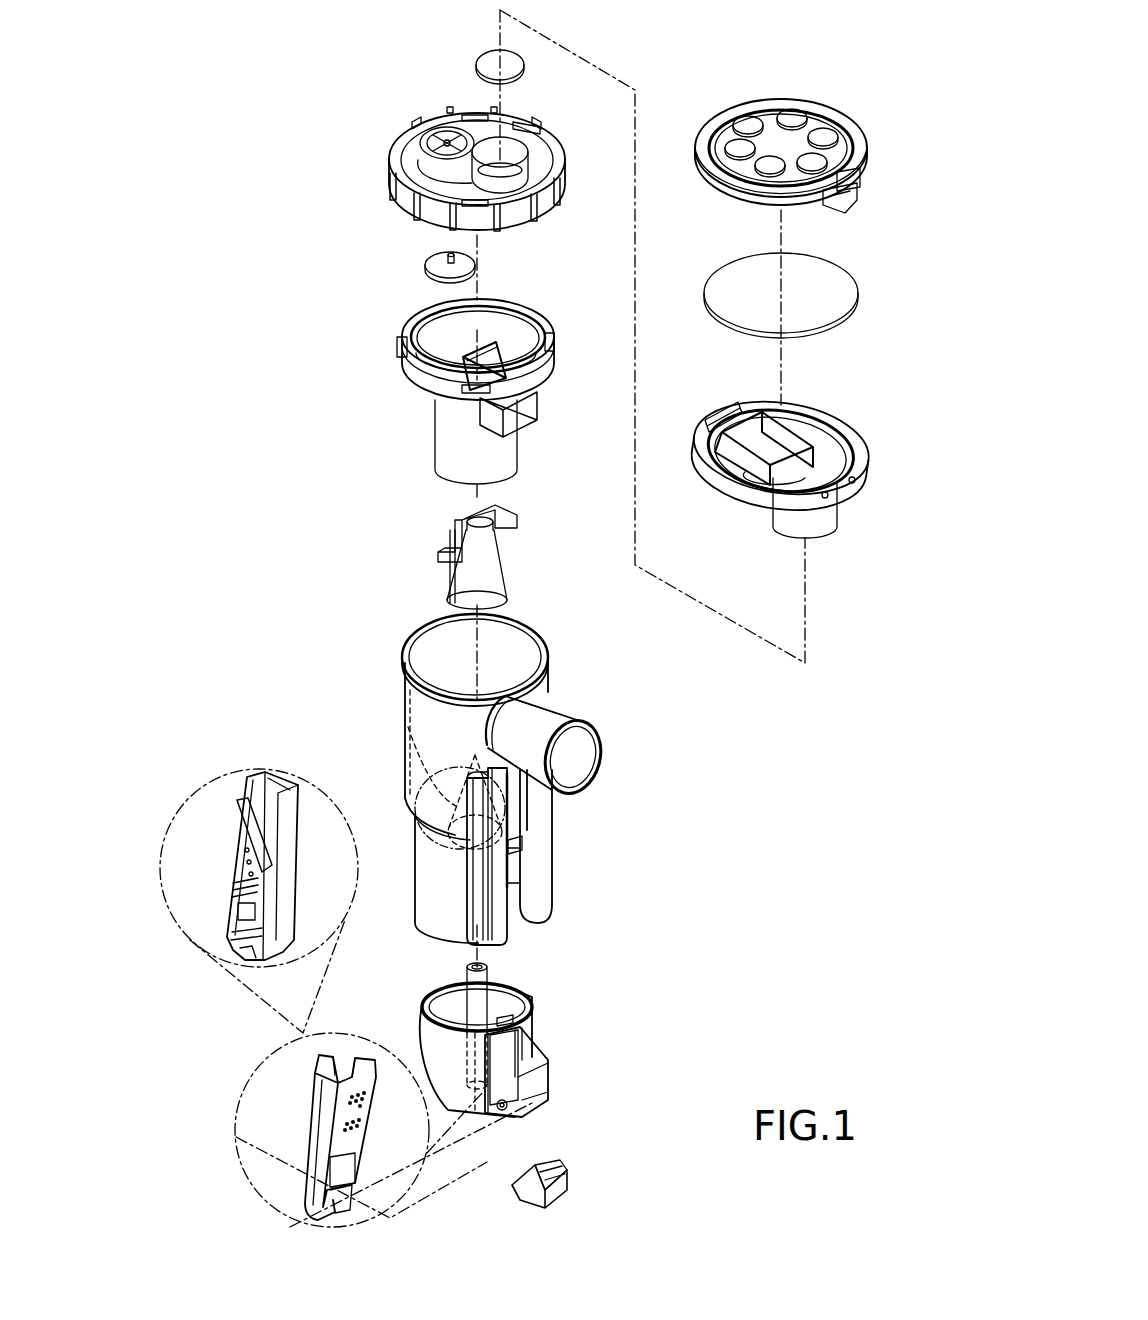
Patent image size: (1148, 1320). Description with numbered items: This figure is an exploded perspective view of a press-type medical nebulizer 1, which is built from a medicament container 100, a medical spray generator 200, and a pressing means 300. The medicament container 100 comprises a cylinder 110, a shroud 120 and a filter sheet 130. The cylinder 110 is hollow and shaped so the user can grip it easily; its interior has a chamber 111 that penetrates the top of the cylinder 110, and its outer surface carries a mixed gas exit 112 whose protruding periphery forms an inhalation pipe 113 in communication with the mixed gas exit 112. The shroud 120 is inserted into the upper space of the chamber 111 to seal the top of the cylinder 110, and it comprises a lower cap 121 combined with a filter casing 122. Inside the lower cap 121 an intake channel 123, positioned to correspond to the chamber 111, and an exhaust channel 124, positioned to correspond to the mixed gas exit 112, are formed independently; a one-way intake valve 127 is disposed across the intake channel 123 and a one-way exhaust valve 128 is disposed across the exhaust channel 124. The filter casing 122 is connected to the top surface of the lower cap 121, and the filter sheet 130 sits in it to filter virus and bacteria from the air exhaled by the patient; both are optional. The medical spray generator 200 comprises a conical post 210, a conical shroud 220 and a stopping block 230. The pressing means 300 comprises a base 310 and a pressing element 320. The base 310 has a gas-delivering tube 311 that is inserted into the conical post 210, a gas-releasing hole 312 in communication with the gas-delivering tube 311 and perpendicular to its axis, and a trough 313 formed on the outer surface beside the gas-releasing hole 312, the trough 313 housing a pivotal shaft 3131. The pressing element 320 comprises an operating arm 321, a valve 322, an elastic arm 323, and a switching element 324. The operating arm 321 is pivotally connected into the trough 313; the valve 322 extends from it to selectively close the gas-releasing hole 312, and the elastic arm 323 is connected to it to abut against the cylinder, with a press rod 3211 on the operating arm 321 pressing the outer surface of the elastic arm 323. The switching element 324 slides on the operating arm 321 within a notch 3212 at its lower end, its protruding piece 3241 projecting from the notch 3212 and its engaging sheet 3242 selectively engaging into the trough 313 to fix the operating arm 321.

The nebulizer 1 is at (212, 84).
The medicament container 100 is at (298, 334).
The cylinder 110 is at (398, 792).
The chamber 111 is at (520, 650).
The mixed gas exit 112 is at (583, 760).
The inhalation pipe 113 is at (560, 717).
The shroud 120 is at (398, 134).
The lower cap 121 is at (452, 440).
The filter casing 122 is at (830, 411).
The intake channel 123 is at (455, 368).
The exhaust channel 124 is at (515, 366).
The one-way intake valve 127 is at (437, 264).
The one-way exhaust valve 128 is at (486, 63).
The filter sheet 130 is at (832, 290).
The medical spray generator 200 is at (325, 518).
The conical post 210 is at (405, 755).
The conical shroud 220 is at (473, 578).
The stopping block 230 is at (455, 532).
The pressing means 300 is at (617, 1043).
The base 310 is at (540, 1022).
The gas-delivering tube 311 is at (482, 993).
The gas-releasing hole 312 is at (507, 1052).
The trough 313 is at (515, 1073).
The pivotal shaft 3131 is at (503, 1118).
The pressing element 320 is at (232, 789).
The operating arm 321 is at (283, 850).
The press rod 3211 is at (263, 850).
The notch 3212 is at (343, 1177).
The valve 322 is at (237, 920).
The elastic arm 323 is at (243, 813).
The switching element 324 is at (572, 1197).
The protruding piece 3241 is at (567, 1183).
The engaging sheet 3242 is at (520, 1198).